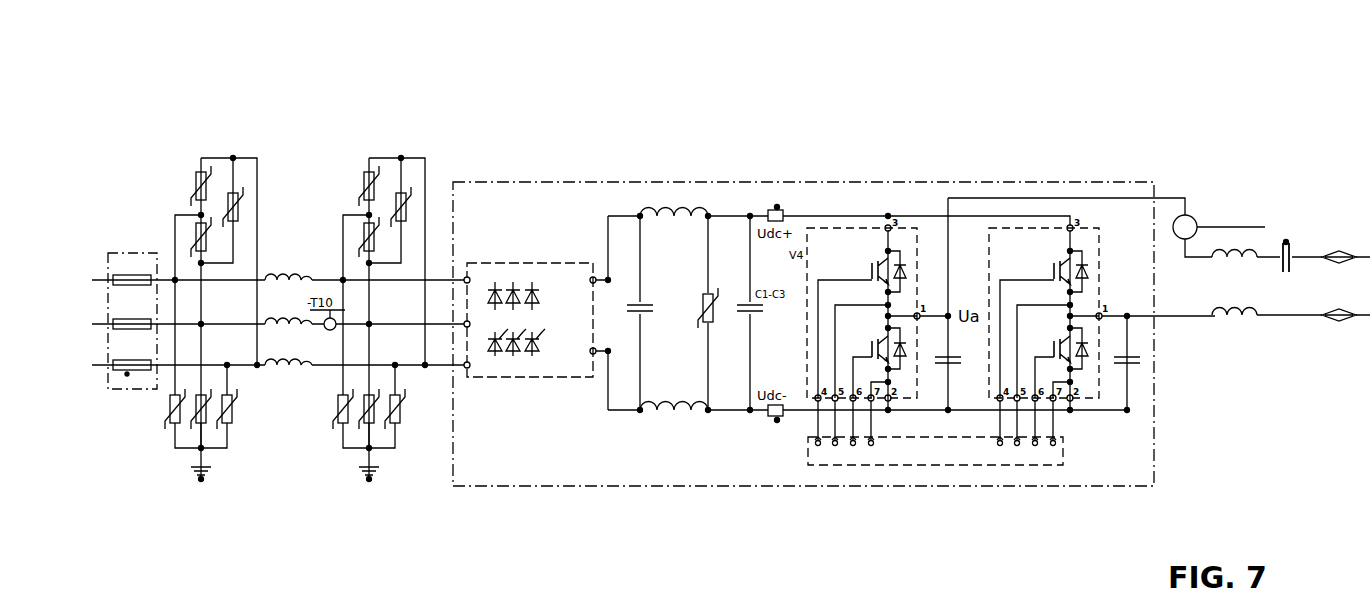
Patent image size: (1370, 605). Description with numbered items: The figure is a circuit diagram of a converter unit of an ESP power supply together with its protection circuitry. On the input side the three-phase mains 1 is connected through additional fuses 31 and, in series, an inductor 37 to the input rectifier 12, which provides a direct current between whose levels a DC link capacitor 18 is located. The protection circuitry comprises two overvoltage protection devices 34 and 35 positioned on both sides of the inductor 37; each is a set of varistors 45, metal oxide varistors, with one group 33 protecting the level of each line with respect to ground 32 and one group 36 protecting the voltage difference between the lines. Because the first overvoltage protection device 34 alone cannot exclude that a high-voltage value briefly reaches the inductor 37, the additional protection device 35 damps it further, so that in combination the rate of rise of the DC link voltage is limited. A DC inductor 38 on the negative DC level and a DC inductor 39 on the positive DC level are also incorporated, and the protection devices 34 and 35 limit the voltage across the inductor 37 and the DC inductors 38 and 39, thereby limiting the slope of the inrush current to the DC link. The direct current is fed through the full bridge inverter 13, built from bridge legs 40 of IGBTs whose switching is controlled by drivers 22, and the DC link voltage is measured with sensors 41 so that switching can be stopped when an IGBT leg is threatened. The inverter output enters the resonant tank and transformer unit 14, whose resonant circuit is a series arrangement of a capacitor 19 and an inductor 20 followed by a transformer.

The mains 1 is at (127, 253).
The input rectifier 12 is at (542, 263).
The full bridge inverter 13 is at (912, 182).
The resonant tank and transformer unit 14 is at (1228, 178).
The DC link capacitor 18 is at (635, 313).
The capacitor 19 is at (1313, 205).
The inductor 20 is at (1245, 320).
The drivers 22 is at (939, 456).
The fuses 31 is at (278, 394).
The ground 32 is at (201, 481).
The group of varistors protecting line level to ground 33 is at (230, 439).
The first overvoltage protection device 34 is at (198, 155).
The additional overvoltage protection device 35 is at (366, 155).
The group of varistors protecting line-to-line voltage 36 is at (220, 167).
The inductor 37 is at (302, 368).
The DC inductor (negative DC level) 38 is at (674, 413).
The DC inductor (positive DC level) 39 is at (668, 205).
The bridge leg 40 is at (1041, 226).
The sensors 41 is at (779, 207).
The varistors 45 is at (406, 190).